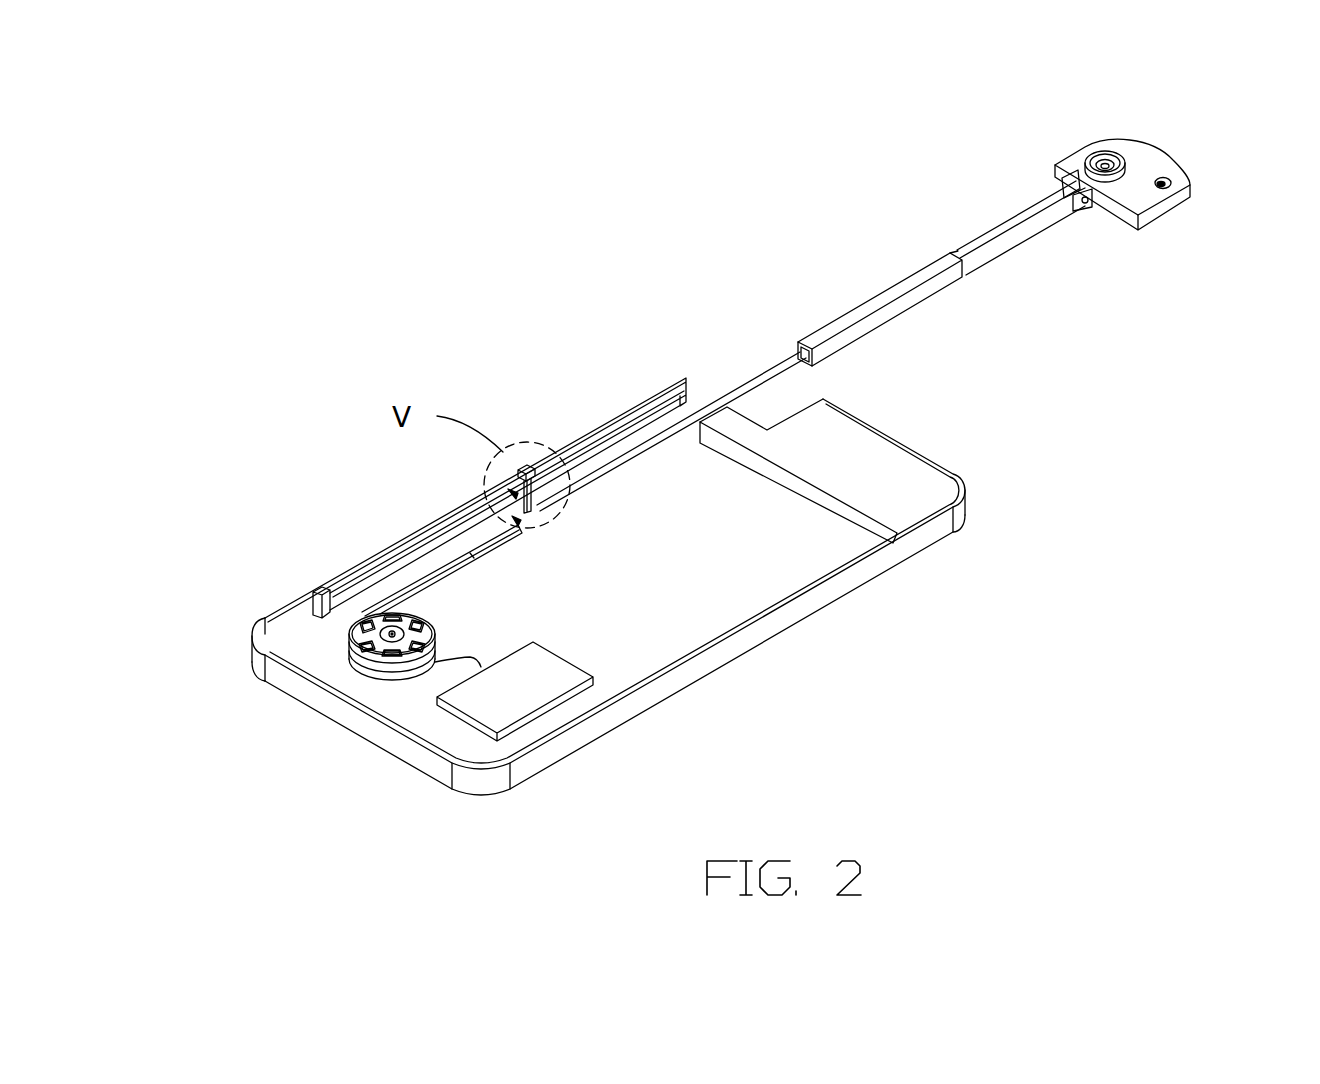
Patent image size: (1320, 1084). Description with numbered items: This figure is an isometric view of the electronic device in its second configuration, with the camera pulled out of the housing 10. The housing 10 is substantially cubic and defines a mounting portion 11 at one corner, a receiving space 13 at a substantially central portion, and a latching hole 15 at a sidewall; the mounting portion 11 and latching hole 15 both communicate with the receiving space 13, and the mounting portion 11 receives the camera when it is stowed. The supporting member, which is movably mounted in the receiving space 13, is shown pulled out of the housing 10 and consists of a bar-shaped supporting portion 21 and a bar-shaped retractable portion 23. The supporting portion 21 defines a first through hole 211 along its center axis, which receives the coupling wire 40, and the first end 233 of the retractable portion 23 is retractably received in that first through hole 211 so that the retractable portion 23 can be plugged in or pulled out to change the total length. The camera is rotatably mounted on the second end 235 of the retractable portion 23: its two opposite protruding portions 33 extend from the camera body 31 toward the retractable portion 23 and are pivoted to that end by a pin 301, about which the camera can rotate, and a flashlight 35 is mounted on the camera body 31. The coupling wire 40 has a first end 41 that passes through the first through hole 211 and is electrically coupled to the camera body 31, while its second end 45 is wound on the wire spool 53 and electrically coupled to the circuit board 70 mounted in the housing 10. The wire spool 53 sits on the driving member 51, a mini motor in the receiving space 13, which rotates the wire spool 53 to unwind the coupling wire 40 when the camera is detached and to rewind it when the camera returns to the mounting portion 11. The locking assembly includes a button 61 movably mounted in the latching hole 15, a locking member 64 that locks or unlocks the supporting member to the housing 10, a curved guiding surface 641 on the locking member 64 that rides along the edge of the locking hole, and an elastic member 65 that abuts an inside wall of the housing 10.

The housing 10 is at (897, 493).
The mounting portion 11 is at (772, 410).
The receiving space 13 is at (645, 617).
The latching hole 15 is at (528, 445).
The supporting portion 21 is at (900, 306).
The first through hole 211 is at (798, 348).
The retractable portion 23 is at (1010, 250).
The first end 233 is at (981, 244).
The second end 235 is at (1058, 186).
The camera body 31 is at (1135, 203).
The pin 301 is at (1086, 204).
The protruding portions 33 is at (1076, 212).
The flashlight 35 is at (1171, 180).
The coupling wire 40 is at (630, 460).
The first end 41 is at (757, 382).
The second end 45 is at (433, 677).
The driving member 51 is at (388, 632).
The wire spool 53 is at (343, 636).
The button 61 is at (517, 470).
The locking member 64 is at (512, 504).
The guiding surface 641 is at (488, 545).
The elastic member 65 is at (508, 493).
The circuit board 70 is at (523, 688).